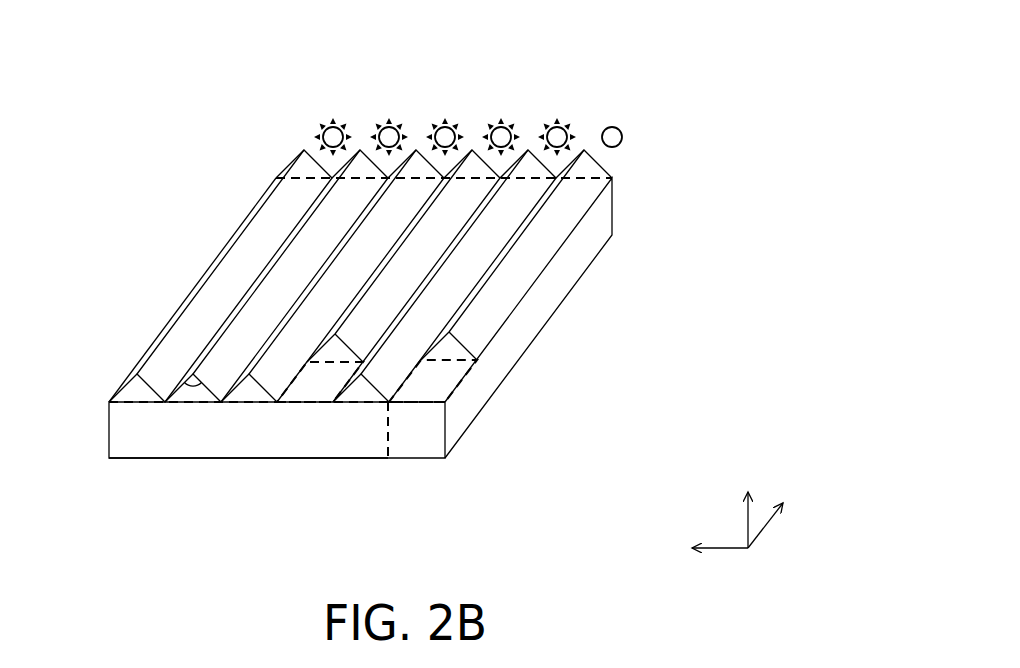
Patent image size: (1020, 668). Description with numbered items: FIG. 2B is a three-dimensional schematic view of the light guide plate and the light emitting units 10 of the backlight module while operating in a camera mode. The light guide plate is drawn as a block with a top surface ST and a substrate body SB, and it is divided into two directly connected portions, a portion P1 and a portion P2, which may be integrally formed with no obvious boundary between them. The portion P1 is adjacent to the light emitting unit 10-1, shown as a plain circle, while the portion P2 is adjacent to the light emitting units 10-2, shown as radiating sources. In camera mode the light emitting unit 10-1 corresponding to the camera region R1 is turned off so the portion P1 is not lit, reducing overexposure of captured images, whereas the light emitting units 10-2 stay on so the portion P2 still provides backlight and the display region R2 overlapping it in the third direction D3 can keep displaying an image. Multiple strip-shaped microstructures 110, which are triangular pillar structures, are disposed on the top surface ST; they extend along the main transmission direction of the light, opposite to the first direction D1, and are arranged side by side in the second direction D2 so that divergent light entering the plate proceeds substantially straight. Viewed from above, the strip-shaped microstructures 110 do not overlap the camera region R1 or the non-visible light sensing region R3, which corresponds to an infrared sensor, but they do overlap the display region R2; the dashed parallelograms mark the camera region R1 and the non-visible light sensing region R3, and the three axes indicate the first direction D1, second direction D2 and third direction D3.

The light emitting units 10 is at (480, 79).
The light emitting unit 10-1 is at (635, 125).
The light emitting unit 10-2 is at (550, 113).
The strip-shaped microstructures 110 is at (198, 327).
The top surface ST is at (130, 398).
The substrate SB is at (130, 461).
The camera region R1 is at (457, 366).
The display region R2 is at (587, 180).
The non-visible light sensing region R3 is at (258, 405).
The portion P1 is at (415, 450).
The portion P2 is at (352, 450).
The first direction D1 is at (780, 509).
The second direction D2 is at (699, 547).
The third direction D3 is at (746, 494).